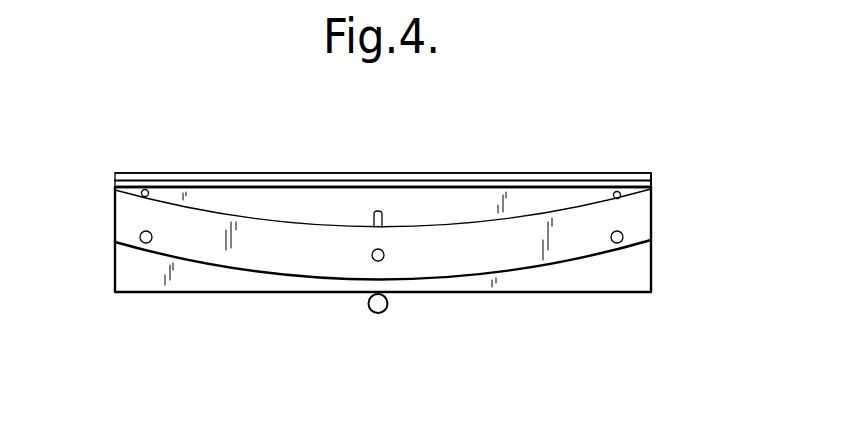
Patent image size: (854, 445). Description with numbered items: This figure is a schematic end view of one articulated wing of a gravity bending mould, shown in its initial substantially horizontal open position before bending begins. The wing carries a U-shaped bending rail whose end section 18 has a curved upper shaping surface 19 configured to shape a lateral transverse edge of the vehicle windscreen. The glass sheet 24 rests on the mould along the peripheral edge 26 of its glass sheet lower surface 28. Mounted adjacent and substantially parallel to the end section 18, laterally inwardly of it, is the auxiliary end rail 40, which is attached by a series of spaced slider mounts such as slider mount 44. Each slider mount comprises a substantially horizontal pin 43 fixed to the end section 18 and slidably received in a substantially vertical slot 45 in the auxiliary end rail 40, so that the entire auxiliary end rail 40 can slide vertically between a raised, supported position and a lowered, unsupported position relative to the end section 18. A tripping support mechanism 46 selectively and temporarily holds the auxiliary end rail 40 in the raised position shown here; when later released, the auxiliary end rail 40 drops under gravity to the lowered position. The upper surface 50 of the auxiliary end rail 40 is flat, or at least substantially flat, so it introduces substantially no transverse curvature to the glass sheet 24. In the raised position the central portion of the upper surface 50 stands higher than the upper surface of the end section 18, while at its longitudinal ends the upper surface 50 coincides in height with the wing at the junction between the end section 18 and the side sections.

The end section 18 is at (304, 252).
The curved upper shaping surface 19 is at (523, 213).
The glass sheet 24 is at (579, 173).
The peripheral edge 26 is at (483, 191).
The glass sheet lower surface 28 is at (648, 185).
The auxiliary end rail 40 is at (332, 200).
The horizontal pin 43 is at (141, 233).
The slider mount 44 is at (612, 244).
The vertical slot 45 is at (144, 189).
The tripping support mechanism 46 is at (373, 313).
The upper surface 50 is at (268, 186).